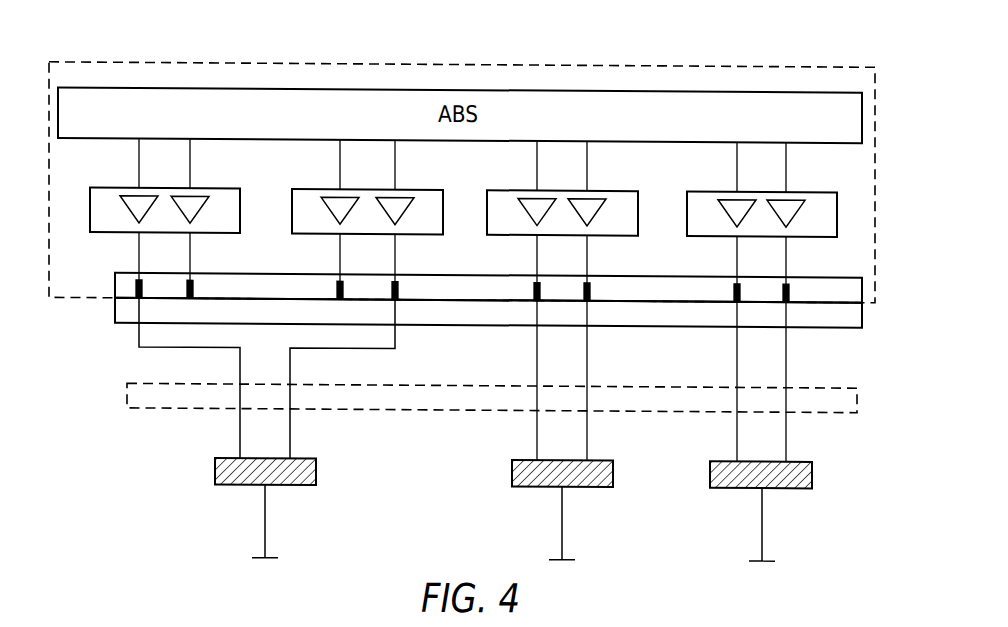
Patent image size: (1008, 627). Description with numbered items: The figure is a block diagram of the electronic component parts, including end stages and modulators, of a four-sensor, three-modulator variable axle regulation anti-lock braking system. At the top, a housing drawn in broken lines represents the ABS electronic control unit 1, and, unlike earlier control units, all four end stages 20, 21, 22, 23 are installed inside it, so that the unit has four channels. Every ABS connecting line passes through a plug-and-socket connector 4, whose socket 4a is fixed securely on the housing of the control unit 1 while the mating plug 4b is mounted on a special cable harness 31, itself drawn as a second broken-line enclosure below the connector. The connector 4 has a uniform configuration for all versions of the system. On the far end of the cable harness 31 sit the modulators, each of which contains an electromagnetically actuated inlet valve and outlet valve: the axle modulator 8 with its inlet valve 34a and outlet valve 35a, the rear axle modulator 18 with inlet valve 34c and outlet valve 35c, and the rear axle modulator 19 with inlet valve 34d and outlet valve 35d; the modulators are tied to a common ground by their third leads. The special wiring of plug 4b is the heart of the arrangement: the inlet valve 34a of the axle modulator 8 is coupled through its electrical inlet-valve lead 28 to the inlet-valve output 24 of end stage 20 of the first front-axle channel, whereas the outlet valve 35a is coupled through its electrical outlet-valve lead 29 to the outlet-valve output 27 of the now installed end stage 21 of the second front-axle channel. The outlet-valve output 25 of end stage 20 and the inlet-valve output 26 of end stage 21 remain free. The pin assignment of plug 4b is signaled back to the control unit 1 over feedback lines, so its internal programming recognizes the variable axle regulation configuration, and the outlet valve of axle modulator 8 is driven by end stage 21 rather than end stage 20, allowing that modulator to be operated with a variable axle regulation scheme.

The ABS electronic control unit 1 is at (105, 62).
The plug-and-socket connector 4 is at (508, 302).
The socket 4a is at (862, 290).
The plug 4b is at (862, 312).
The axle modulator 8 is at (255, 507).
The modulator 18 is at (553, 495).
The modulator 19 is at (765, 496).
The end stage 20 is at (182, 187).
The end stage 21 is at (334, 187).
The end stage 22 is at (582, 187).
The end stage 23 is at (697, 187).
The inlet-valve output 24 is at (136, 234).
The outlet-valve output 25 is at (192, 234).
The inlet-valve output 26 is at (337, 234).
The outlet-valve output 27 is at (397, 234).
The inlet-valve lead 28 is at (236, 456).
The outlet-valve lead 29 is at (294, 456).
The cable harness 31 is at (127, 395).
The inlet valve 34a is at (214, 473).
The outlet valve 35a is at (317, 474).
The inlet valve 34c is at (511, 475).
The outlet valve 35c is at (614, 477).
The inlet valve 34d is at (709, 475).
The outlet valve 35d is at (813, 477).